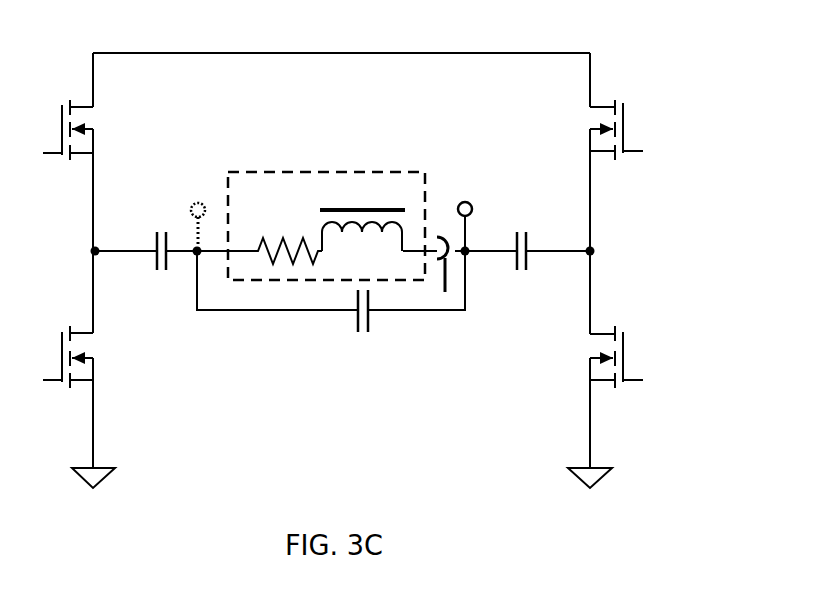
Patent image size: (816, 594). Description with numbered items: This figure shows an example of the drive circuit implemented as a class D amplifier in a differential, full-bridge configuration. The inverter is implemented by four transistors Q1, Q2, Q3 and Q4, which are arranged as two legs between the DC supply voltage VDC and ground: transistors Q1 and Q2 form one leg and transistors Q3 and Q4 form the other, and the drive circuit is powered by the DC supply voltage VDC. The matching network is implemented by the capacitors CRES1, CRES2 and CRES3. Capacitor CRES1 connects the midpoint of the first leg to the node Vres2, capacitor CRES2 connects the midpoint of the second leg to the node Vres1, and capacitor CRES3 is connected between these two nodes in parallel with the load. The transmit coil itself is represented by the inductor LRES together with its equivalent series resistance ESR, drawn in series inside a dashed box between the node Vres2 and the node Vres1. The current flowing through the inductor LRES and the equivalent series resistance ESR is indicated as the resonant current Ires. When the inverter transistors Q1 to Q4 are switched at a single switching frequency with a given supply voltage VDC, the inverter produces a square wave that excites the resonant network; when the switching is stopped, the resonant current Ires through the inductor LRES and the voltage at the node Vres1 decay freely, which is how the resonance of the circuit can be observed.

The DC supply voltage VDC is at (341, 46).
The transistor Q1 is at (93, 130).
The transistor Q2 is at (93, 357).
The transistor Q3 is at (590, 130).
The transistor Q4 is at (589, 357).
The capacitor CRES1 is at (146, 241).
The capacitor CRES2 is at (541, 241).
The capacitor CRES3 is at (331, 305).
The equivalent series resistance ESR is at (287, 247).
The inductor LRES is at (362, 220).
The node Vres1 is at (490, 210).
The second resonant voltage node Vres2 is at (174, 208).
The resonant current Ires is at (436, 274).